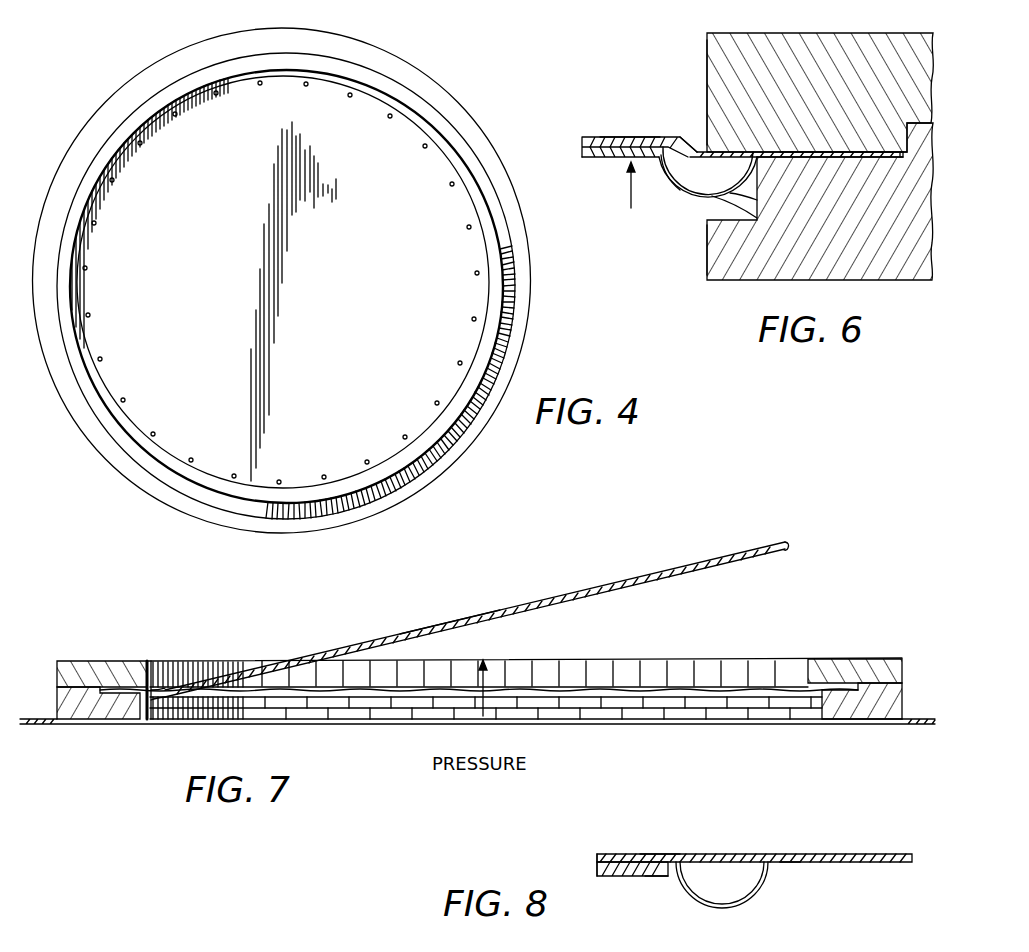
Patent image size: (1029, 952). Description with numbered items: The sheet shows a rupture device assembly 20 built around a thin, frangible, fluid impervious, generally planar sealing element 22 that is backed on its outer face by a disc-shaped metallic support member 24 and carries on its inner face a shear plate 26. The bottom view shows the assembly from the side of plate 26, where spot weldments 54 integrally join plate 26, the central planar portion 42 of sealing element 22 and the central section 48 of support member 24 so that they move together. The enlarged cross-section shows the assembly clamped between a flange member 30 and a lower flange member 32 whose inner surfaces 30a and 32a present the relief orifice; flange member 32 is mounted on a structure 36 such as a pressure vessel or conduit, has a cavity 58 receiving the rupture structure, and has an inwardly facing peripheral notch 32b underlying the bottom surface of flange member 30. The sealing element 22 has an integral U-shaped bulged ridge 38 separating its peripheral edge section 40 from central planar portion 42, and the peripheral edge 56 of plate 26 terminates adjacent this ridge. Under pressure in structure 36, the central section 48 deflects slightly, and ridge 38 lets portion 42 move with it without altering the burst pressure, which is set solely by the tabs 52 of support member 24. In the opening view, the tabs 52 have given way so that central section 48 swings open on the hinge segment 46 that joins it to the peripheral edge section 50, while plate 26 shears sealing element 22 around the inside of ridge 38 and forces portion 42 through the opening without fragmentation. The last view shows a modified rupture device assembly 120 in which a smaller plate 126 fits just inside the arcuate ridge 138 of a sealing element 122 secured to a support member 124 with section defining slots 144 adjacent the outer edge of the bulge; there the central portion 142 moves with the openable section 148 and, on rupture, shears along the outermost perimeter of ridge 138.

In FIG. 4, the rupture device assembly 20 is at (453, 96).
In FIG. 7, the rupture device assembly 20 is at (479, 594).
In FIG. 4, the sealing element 22 is at (385, 510).
In FIG. 7, the sealing element 22 is at (788, 547).
In FIG. 7, the support member 24 is at (586, 590).
In FIG. 4, the plate 26 is at (338, 310).
In FIG. 6, the plate 26 is at (612, 159).
In FIG. 7, the plate 26 is at (649, 582).
In FIG. 6, the flange member 30 is at (759, 26).
In FIG. 7, the flange member 30 is at (86, 660).
In FIG. 6, the inner surface 30a is at (707, 56).
In FIG. 6, the flange member 32 is at (740, 269).
In FIG. 7, the flange member 32 is at (90, 718).
In FIG. 6, the inner surface 32a is at (707, 246).
In FIG. 6, the notch 32b is at (714, 206).
In FIG. 7, the structure 36 is at (44, 724).
In FIG. 4, the bulged ridge 38 is at (350, 486).
In FIG. 6, the bulged ridge 38 is at (680, 186).
In FIG. 7, the bulged ridge 38 is at (149, 719).
In FIG. 6, the peripheral edge section 40 is at (816, 160).
In FIG. 6, the central planar portion 42 is at (600, 137).
In FIG. 7, the hinge segment 46 is at (156, 675).
In FIG. 6, the central section 48 is at (636, 136).
In FIG. 7, the central section 48 is at (478, 618).
In FIG. 6, the peripheral edge section 50 is at (806, 151).
In FIG. 7, the peripheral edge section 50 is at (826, 658).
In FIG. 6, the tabs 52 is at (705, 150).
In FIG. 4, the spot weldments 54 is at (403, 436).
In FIG. 6, the peripheral edge 56 is at (656, 163).
In FIG. 6, the cavity 58 is at (880, 160).
In FIG. 8, the rupture device assembly 120 is at (597, 856).
In FIG. 8, the sealing element 122 is at (789, 864).
In FIG. 8, the support member 124 is at (628, 854).
In FIG. 8, the plate 126 is at (632, 877).
In FIG. 8, the ridge 138 is at (716, 900).
In FIG. 8, the central portion 142 is at (651, 868).
In FIG. 8, the slots 144 is at (740, 854).
In FIG. 8, the openable section 148 is at (659, 854).